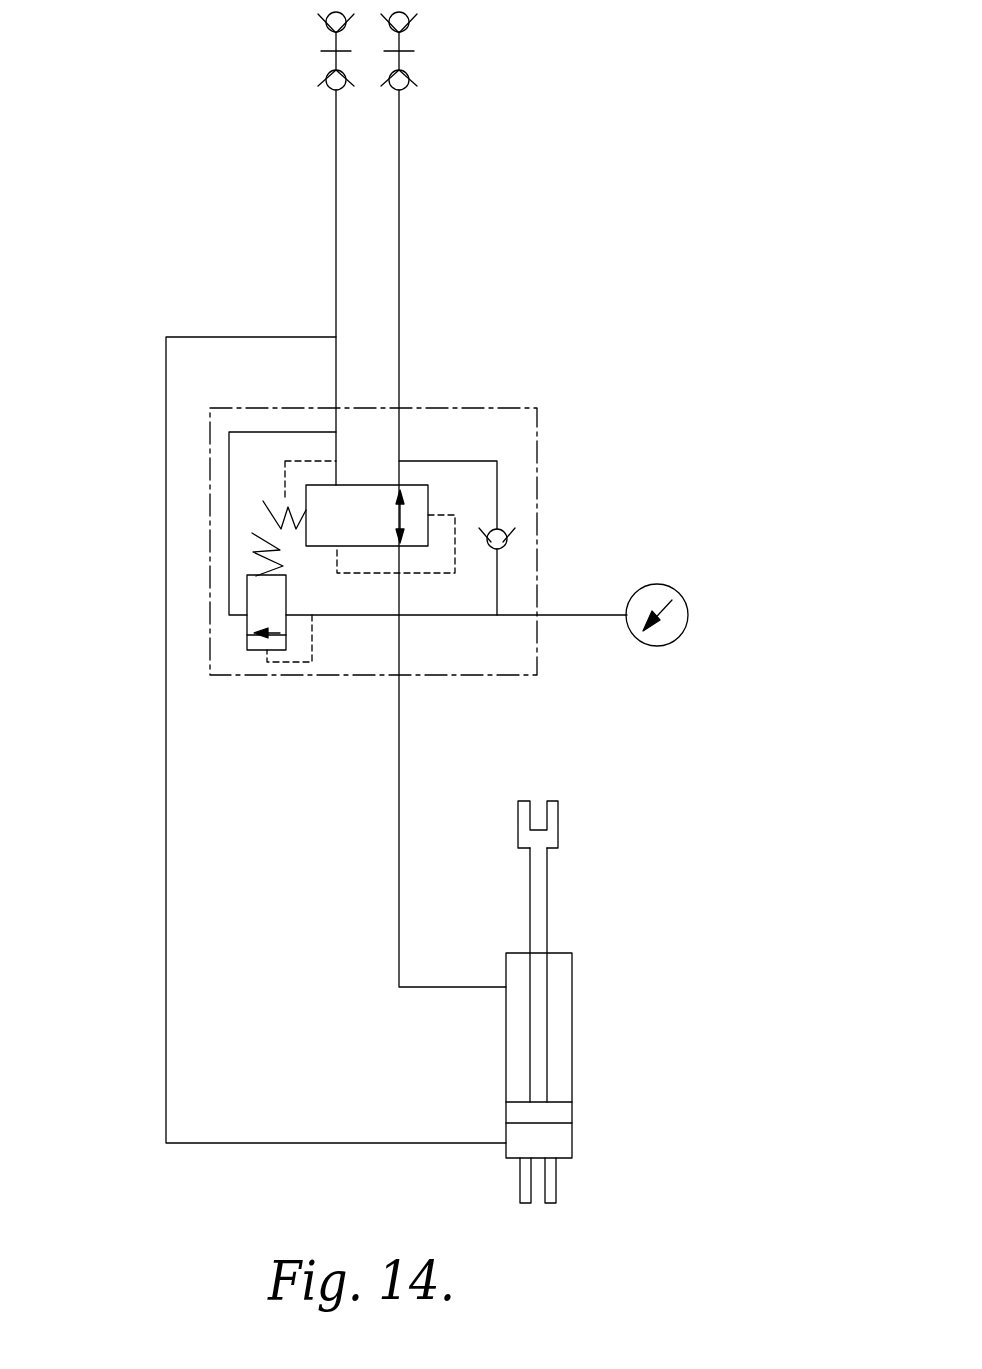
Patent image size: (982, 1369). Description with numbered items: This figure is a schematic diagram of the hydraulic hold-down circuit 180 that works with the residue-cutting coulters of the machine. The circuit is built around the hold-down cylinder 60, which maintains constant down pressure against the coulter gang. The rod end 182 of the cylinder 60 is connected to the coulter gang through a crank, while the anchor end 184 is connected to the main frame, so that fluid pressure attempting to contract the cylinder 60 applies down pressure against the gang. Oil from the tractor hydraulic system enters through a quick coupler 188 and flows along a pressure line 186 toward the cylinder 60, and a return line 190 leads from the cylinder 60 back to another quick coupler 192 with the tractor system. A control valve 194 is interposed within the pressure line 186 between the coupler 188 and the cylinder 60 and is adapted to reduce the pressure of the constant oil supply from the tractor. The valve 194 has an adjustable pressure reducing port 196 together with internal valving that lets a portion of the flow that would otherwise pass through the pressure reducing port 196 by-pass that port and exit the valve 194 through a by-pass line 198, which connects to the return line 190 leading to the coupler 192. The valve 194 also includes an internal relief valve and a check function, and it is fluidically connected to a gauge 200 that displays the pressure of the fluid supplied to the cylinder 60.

The hold-down cylinder 60 is at (580, 952).
The hydraulic hold-down circuit 180 is at (450, 328).
The rod end 182 is at (553, 820).
The anchor end 184 is at (556, 1188).
The pressure line 186 is at (400, 214).
The quick coupler 188 is at (425, 65).
The return line 190 is at (166, 1083).
The quick coupler 192 is at (300, 65).
The control valve 194 is at (552, 466).
The adjustable pressure reducing port 196 is at (400, 676).
The by-pass line 198 is at (336, 383).
The gauge 200 is at (663, 585).